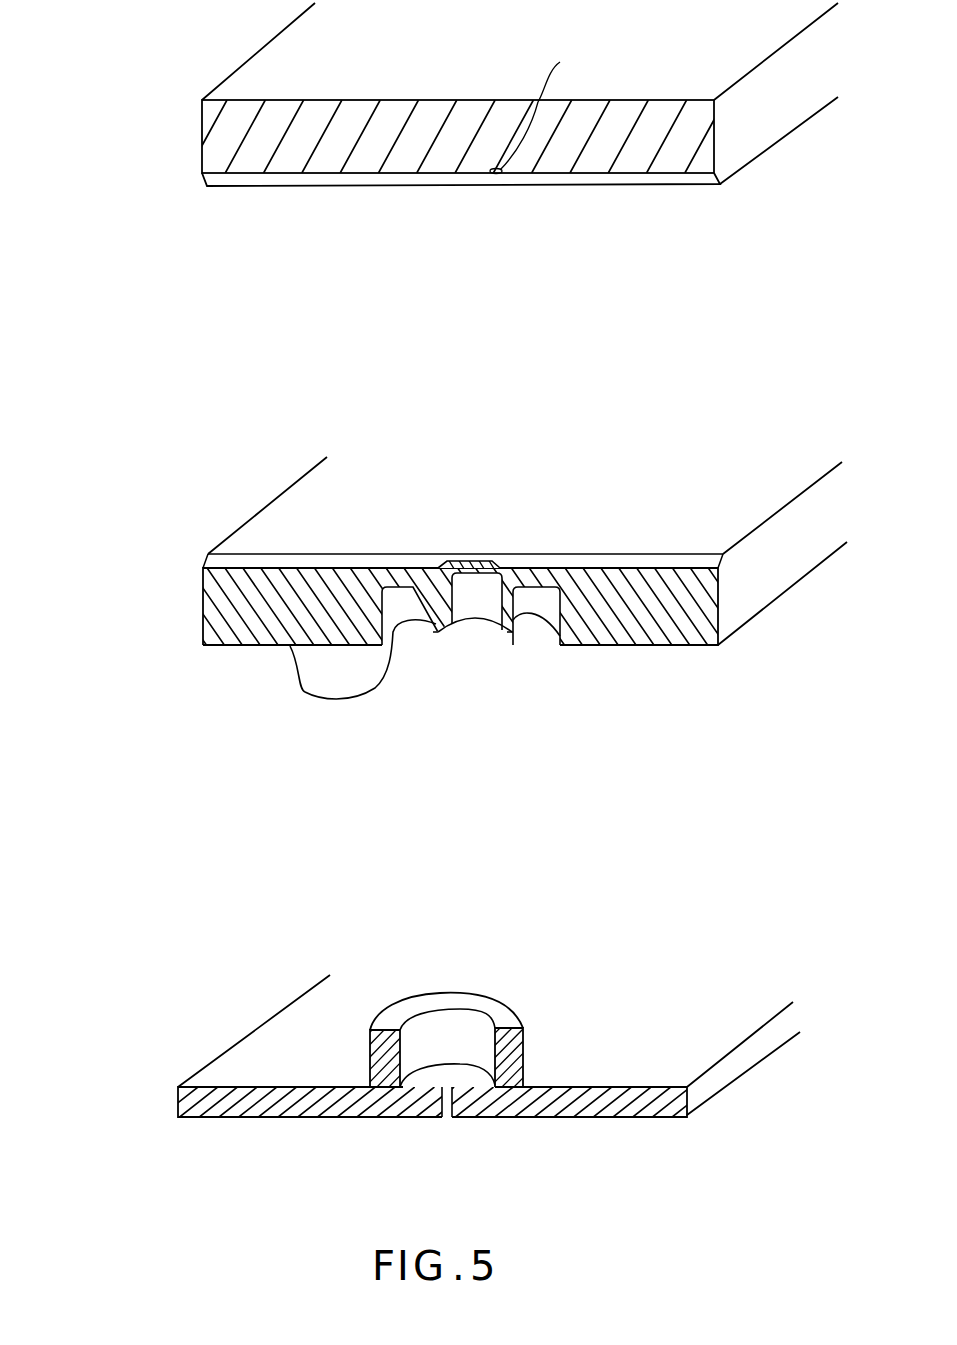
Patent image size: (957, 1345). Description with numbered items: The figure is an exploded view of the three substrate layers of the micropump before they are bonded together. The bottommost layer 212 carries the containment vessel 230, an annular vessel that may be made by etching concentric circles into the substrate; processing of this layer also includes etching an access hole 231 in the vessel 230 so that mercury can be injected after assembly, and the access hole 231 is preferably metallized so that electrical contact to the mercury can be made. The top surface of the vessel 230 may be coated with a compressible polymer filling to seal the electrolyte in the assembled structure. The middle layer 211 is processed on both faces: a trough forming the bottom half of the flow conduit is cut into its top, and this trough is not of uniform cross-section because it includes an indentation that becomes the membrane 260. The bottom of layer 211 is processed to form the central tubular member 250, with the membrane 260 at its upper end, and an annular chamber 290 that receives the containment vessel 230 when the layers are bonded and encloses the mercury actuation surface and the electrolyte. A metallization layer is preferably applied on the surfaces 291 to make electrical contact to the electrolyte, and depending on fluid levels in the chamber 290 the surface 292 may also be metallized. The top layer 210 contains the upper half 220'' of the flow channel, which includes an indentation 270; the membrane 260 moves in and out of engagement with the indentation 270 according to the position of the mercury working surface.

The layer 210 is at (792, 104).
The indentation 270 is at (552, 105).
The upper half of flow channel 220'' is at (393, 197).
The layer 211 is at (792, 555).
The membrane 260 is at (494, 556).
The central tubular member 250 is at (478, 602).
The annular chamber 290 is at (535, 628).
The surfaces 291 is at (298, 686).
The surface 292 is at (410, 590).
The bottommost layer 212 is at (770, 1040).
The containment vessel 230 is at (523, 1048).
The access hole 231 is at (445, 1103).